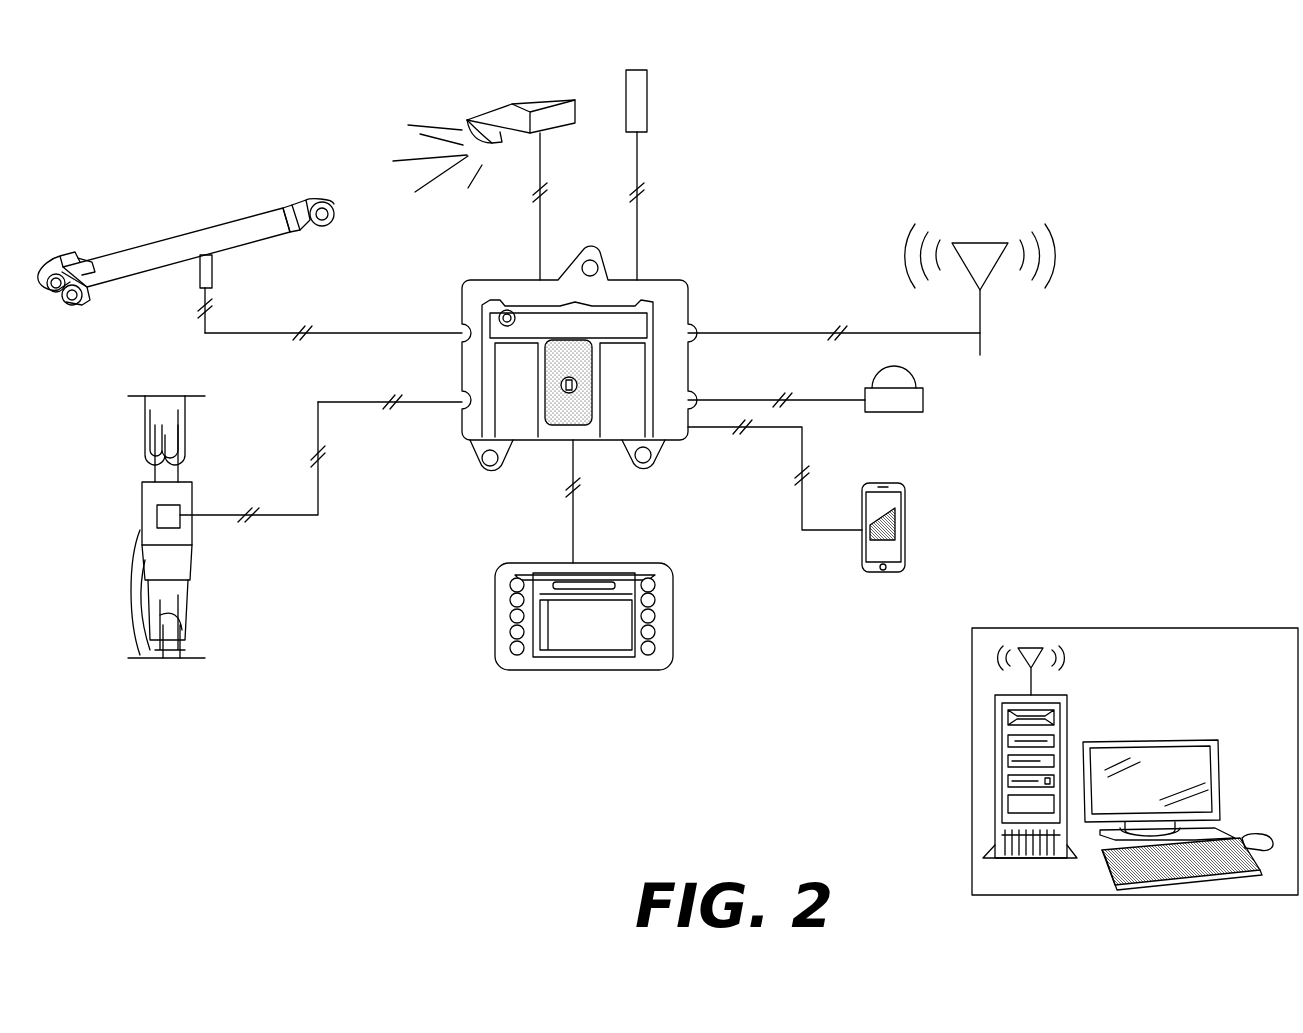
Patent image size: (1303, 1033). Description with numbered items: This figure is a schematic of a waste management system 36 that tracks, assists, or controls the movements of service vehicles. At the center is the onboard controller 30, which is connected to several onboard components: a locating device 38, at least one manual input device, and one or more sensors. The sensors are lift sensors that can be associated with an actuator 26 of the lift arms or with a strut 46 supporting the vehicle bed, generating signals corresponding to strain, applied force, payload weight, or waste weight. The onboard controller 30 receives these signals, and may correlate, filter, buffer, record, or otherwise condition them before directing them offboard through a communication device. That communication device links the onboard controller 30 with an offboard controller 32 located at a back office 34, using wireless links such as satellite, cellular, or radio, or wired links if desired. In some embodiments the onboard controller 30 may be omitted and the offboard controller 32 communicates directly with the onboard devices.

The actuator 26 is at (130, 246).
The onboard controller 30 is at (684, 300).
The offboard controller 32 is at (1067, 730).
The back office 34 is at (972, 835).
The waste management system 36 is at (934, 104).
The locating device 38 is at (924, 405).
The strut 46 is at (192, 548).